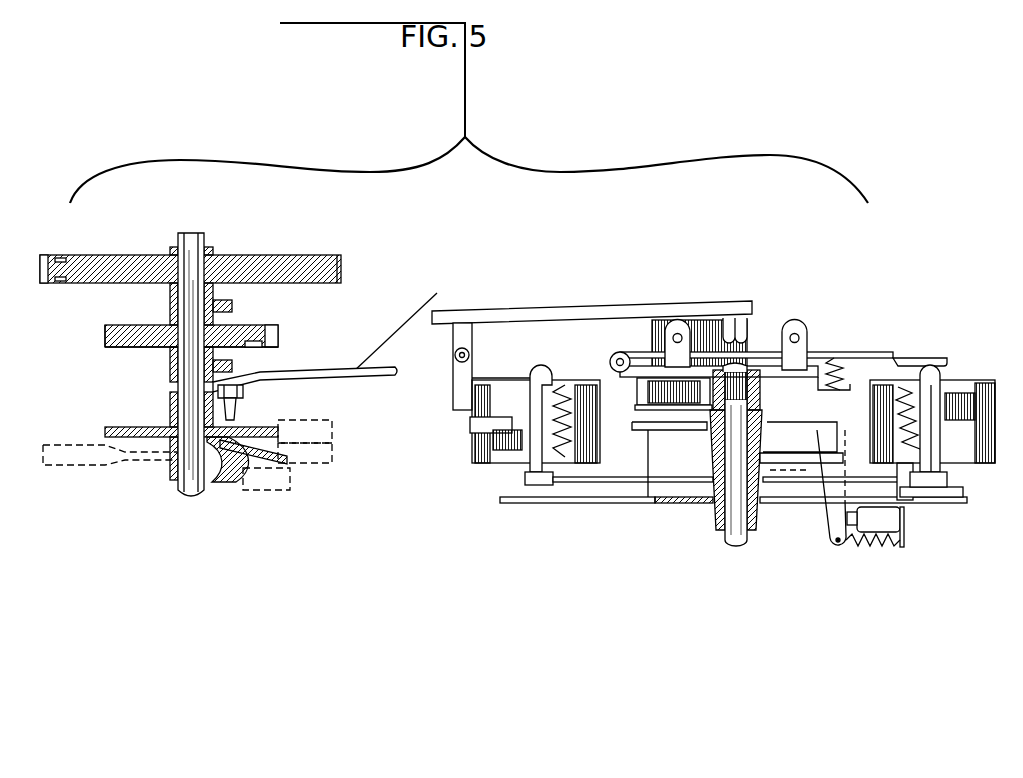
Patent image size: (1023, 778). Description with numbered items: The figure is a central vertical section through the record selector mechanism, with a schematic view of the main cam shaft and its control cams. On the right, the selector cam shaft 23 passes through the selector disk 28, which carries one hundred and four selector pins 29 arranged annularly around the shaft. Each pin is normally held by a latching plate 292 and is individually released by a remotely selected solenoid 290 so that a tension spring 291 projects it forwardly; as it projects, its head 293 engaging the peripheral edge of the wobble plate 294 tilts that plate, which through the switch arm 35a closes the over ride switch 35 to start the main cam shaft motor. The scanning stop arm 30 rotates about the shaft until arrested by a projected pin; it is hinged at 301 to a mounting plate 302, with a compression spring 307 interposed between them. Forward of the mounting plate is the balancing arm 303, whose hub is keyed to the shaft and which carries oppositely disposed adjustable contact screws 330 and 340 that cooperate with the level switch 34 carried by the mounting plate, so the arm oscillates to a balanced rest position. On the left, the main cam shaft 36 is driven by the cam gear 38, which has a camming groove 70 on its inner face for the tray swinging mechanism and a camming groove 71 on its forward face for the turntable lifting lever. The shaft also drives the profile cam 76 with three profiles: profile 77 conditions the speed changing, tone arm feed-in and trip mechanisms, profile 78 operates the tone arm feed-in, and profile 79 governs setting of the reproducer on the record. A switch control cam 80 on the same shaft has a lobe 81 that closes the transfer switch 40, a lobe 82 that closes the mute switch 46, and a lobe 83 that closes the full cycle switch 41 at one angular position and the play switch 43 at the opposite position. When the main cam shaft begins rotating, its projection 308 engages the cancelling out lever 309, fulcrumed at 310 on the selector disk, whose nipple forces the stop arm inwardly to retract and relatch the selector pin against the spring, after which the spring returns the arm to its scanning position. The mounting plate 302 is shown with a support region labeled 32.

The selector cam shaft 23 is at (714, 518).
The selector disk 28 is at (500, 382).
The selector pins 29 is at (540, 376).
The scanning stop arm 30 is at (878, 352).
The support plate 32 is at (585, 482).
The level switch 34 is at (656, 330).
The over ride switch 35 is at (885, 519).
The switch arm 35a is at (833, 520).
The main cam shaft 36 is at (196, 247).
The cam gear 38 is at (45, 257).
The transfer switch 40 is at (332, 432).
The full cycle switch 41 is at (332, 458).
The play switch 43 is at (63, 458).
The mute switch 46 is at (262, 478).
The camming groove 70 is at (88, 258).
The camming groove 71 is at (65, 258).
The profile cam 76 is at (105, 340).
The first profile 77 is at (280, 330).
The second profile 78 is at (270, 346).
The third profile 79 is at (258, 340).
The switch control cam 80 is at (110, 440).
The lobe 81 is at (305, 431).
The lobe 82 is at (262, 481).
The lobe 83 is at (280, 461).
The solenoid 290 is at (500, 450).
The tension spring 291 is at (565, 388).
The latching plate 292 is at (565, 463).
The head 293 is at (537, 483).
The wobble plate 294 is at (607, 483).
The hinge 301 is at (612, 359).
The mounting plate 302 is at (648, 378).
The balancing arm 303 is at (705, 375).
The compression spring 307 is at (838, 372).
The projection 308 is at (240, 423).
The cancelling out lever 309 is at (458, 314).
The fulcrum 310 is at (466, 352).
The contact screw 330 is at (796, 336).
The contact screw 340 is at (678, 334).